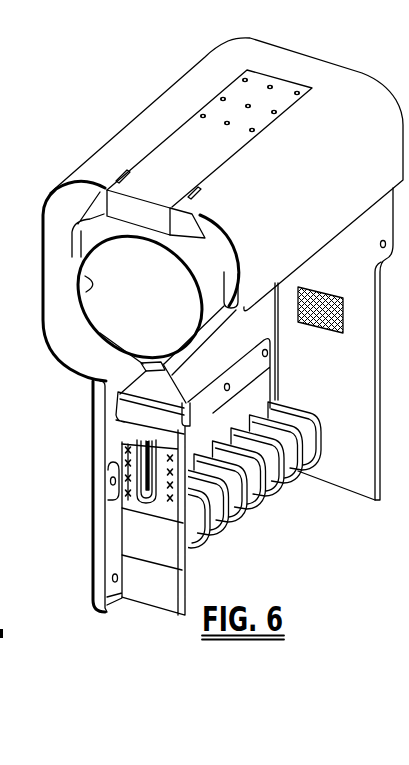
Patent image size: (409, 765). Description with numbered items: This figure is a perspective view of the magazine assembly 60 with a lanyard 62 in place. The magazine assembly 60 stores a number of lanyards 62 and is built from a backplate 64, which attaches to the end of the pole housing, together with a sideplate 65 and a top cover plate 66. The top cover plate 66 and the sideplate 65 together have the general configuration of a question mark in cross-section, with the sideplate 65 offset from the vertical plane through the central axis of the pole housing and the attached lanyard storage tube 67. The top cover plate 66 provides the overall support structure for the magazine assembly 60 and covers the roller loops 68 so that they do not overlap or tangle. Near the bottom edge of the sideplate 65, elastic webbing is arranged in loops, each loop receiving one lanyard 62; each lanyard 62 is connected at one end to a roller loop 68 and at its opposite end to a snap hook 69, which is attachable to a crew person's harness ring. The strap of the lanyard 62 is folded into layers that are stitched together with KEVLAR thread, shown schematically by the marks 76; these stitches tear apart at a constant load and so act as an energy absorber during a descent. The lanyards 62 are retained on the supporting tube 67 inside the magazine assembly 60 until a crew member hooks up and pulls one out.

The magazine assembly 60 is at (155, 125).
The lanyard 62 is at (167, 508).
The backplate 64 is at (351, 391).
The sideplate 65 is at (93, 475).
The top cover plate 66 is at (275, 62).
The lanyard storage tube 67 is at (80, 290).
The roller loop 68 is at (199, 220).
The snap hook 69 is at (148, 442).
The stitching marks 76 is at (150, 222).